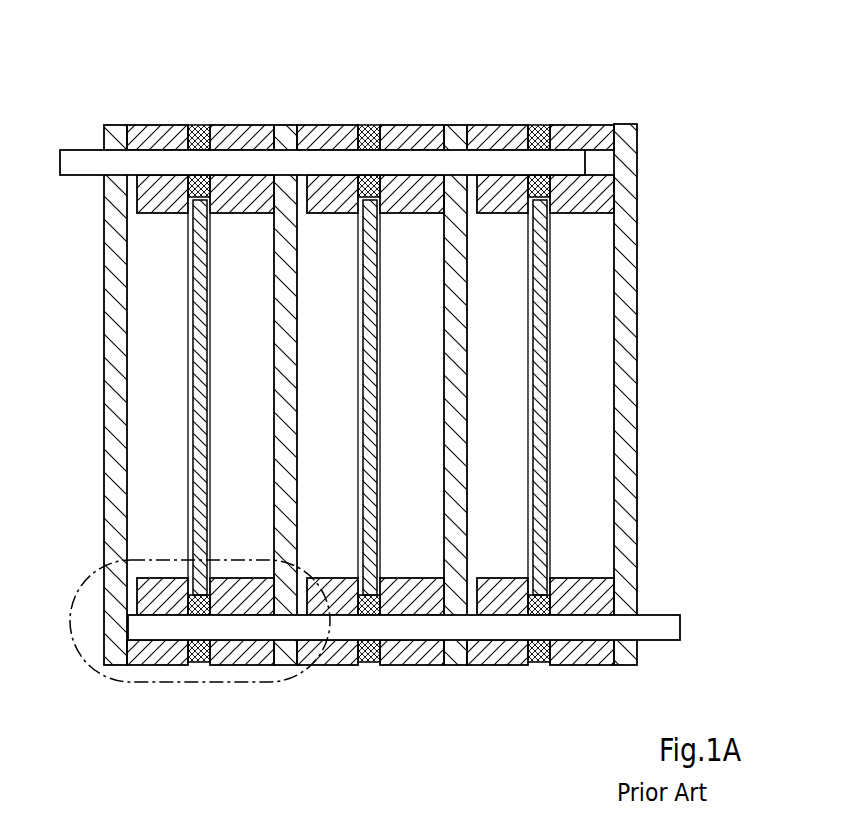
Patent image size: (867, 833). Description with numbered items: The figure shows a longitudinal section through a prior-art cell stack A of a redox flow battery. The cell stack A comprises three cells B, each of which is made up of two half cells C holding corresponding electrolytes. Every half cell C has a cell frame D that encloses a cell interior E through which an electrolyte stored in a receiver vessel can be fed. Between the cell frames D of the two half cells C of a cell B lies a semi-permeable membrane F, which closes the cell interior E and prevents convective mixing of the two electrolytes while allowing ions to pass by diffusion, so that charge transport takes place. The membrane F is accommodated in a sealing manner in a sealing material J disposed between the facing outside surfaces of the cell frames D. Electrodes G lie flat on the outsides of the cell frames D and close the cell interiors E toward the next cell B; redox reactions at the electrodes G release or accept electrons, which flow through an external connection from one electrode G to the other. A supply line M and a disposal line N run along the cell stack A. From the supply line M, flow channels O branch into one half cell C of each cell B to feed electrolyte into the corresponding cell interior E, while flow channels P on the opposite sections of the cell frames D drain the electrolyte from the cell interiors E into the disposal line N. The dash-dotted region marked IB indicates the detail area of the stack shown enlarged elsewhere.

The cell stack A is at (700, 84).
The cell B is at (280, 62).
The half cell C is at (117, 118).
The cell frame D is at (603, 700).
The cell interior E is at (590, 339).
The semi-permeable membrane F is at (575, 420).
The electrode G is at (660, 458).
The sealing material J is at (553, 700).
The supply line M is at (72, 157).
The disposal line N is at (663, 628).
The flow channel O is at (483, 249).
The flow channel P is at (474, 578).
The detail region of Fig. 1B IB is at (90, 670).